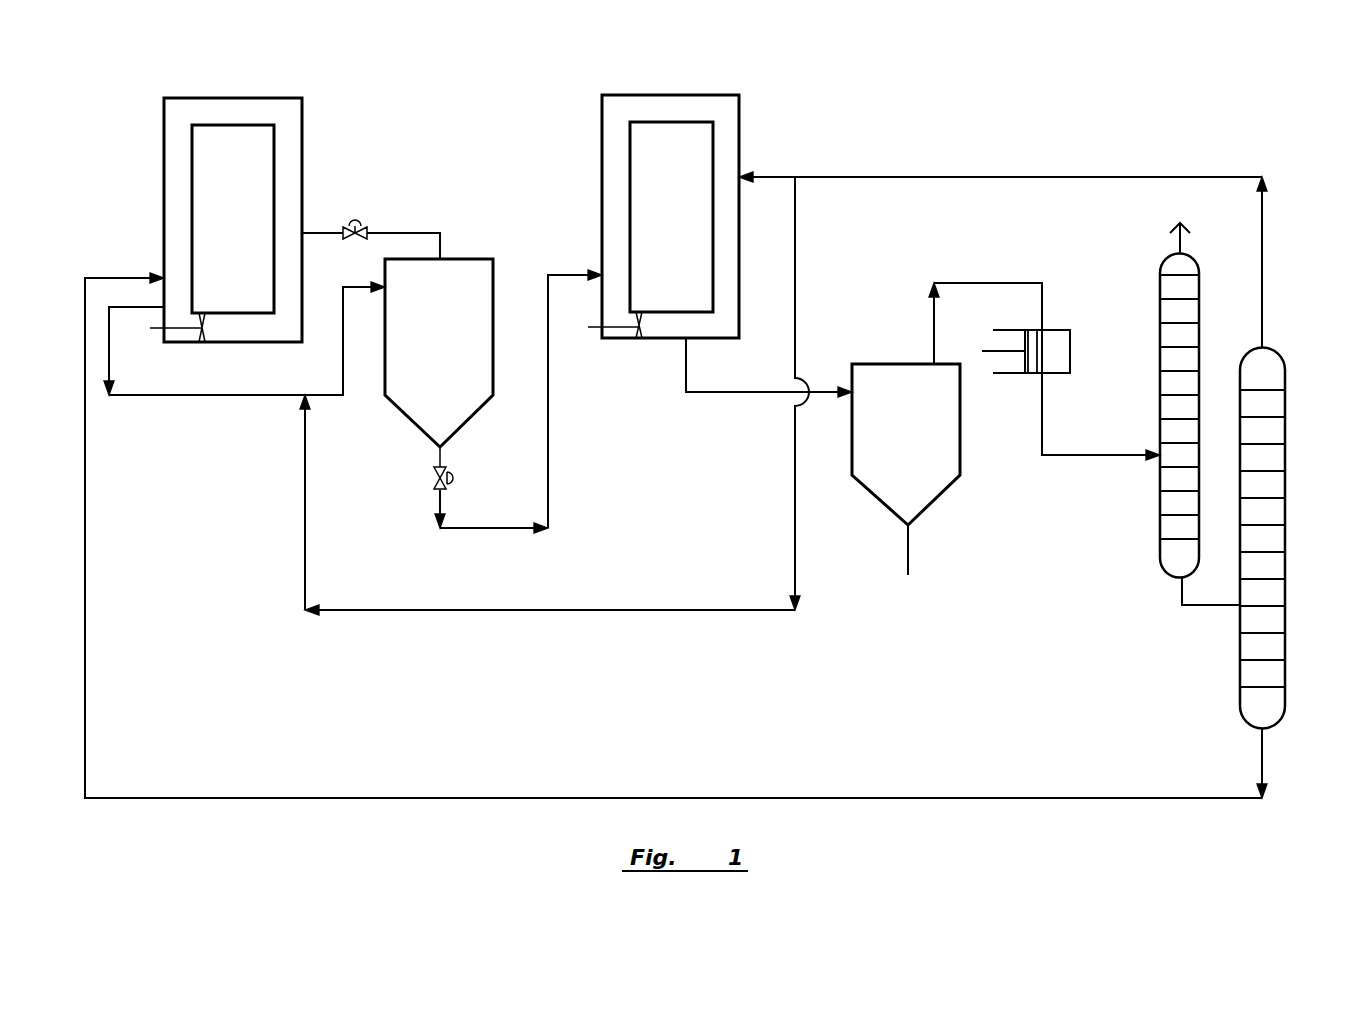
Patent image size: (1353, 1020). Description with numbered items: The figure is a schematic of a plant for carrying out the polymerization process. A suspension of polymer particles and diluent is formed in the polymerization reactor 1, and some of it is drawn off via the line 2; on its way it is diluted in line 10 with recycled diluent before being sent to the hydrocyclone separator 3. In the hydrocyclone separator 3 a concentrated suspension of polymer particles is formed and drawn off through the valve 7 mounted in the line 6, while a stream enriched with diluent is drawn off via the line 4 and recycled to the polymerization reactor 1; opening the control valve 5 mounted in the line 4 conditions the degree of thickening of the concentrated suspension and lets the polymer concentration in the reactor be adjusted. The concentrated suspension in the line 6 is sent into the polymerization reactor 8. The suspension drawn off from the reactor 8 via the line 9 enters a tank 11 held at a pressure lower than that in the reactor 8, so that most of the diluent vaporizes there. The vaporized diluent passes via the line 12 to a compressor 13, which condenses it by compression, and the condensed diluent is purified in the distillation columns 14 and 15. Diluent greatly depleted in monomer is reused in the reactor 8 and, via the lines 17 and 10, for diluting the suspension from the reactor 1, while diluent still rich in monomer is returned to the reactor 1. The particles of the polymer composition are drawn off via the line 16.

The polymerization reactor 1 is at (178, 136).
The line 2 is at (150, 397).
The hydrocyclone separator 3 is at (470, 313).
The line 4 is at (440, 245).
The control valve 5 is at (355, 215).
The line 6 is at (513, 526).
The valve 7 is at (433, 469).
The polymerization reactor 8 is at (724, 131).
The line 9 is at (684, 380).
The line 10 is at (305, 535).
The tank 11 is at (935, 430).
The line 12 is at (955, 283).
The compressor 13 is at (1060, 345).
The distillation column 14 is at (1180, 285).
The distillation column 15 is at (1263, 512).
The line 16 is at (908, 556).
The line 17 is at (1262, 240).